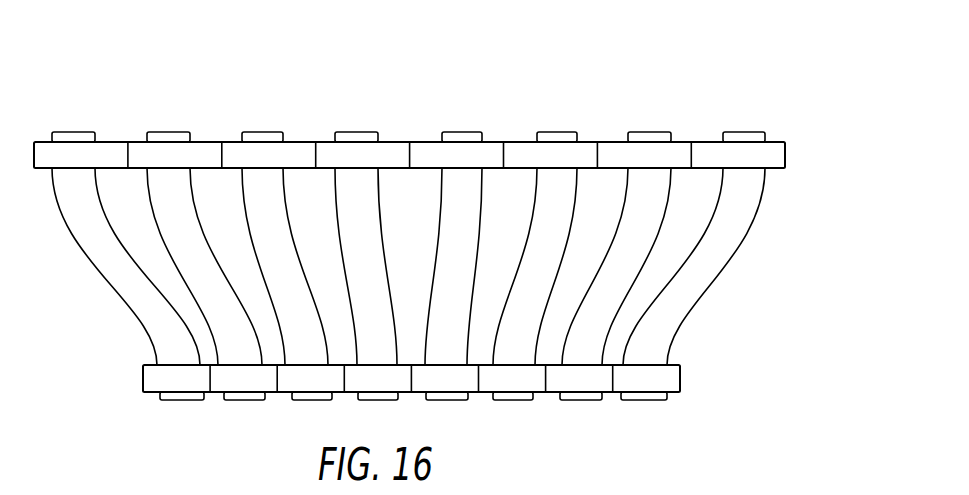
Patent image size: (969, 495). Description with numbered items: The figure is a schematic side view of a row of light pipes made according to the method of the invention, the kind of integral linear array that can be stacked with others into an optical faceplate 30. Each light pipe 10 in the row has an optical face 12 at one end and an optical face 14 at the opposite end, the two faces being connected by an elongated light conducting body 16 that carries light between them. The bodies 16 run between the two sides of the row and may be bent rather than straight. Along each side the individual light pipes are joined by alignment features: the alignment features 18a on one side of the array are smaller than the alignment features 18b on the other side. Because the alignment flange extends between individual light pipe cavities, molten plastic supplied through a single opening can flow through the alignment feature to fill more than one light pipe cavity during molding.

The light pipe 10 is at (112, 307).
The optical faceplate 30 is at (262, 97).
The optical face 12 is at (647, 401).
The optical face 14 is at (648, 132).
The elongated light conducting body 16 is at (725, 268).
The alignment features 18a is at (680, 370).
The alignment features 18b is at (785, 143).